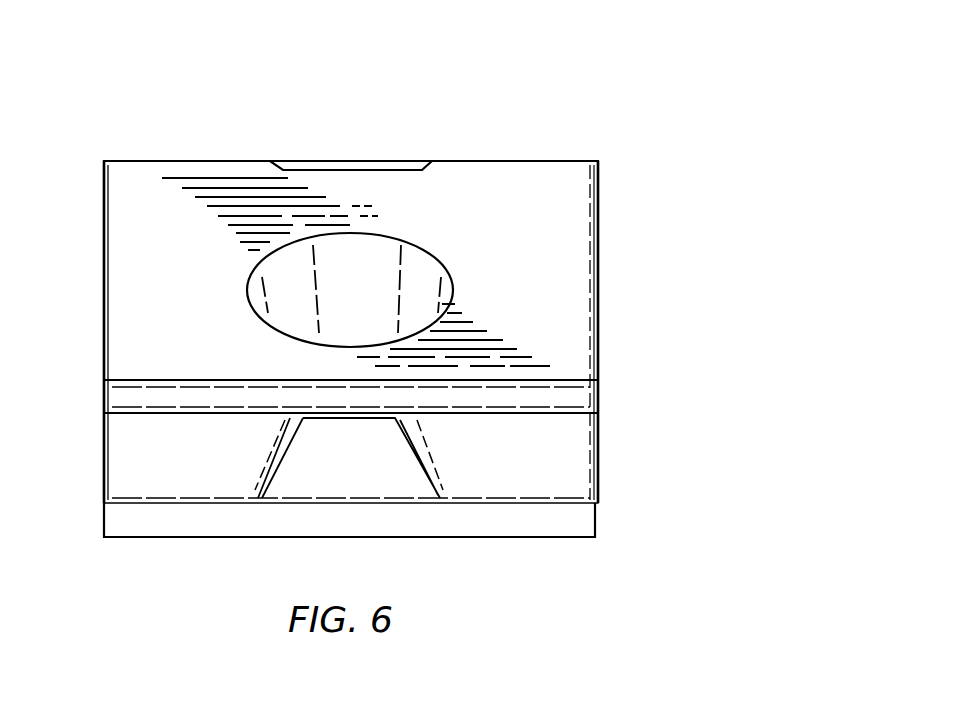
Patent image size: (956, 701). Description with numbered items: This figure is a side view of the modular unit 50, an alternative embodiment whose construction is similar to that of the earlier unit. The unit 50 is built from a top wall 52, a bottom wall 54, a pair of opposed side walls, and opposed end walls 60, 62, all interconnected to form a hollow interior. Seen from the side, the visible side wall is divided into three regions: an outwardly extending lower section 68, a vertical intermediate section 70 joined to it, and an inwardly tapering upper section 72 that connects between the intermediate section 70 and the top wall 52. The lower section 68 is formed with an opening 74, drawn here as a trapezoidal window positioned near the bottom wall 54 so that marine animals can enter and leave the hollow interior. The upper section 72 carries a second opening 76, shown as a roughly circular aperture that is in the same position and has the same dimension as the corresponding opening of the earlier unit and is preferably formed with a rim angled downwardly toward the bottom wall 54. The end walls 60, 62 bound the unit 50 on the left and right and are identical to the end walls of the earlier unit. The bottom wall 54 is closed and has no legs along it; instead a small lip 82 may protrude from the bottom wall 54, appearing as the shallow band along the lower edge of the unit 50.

The modular unit 50 is at (655, 117).
The top wall 52 is at (253, 159).
The bottom wall 54 is at (248, 554).
The end wall 60 is at (104, 203).
The end wall 62 is at (600, 232).
The lower section 68 is at (122, 468).
The intermediate section 70 is at (123, 392).
The upper section 72 is at (116, 305).
The opening 74 is at (403, 470).
The opening 76 is at (349, 262).
The lip 82 is at (543, 538).